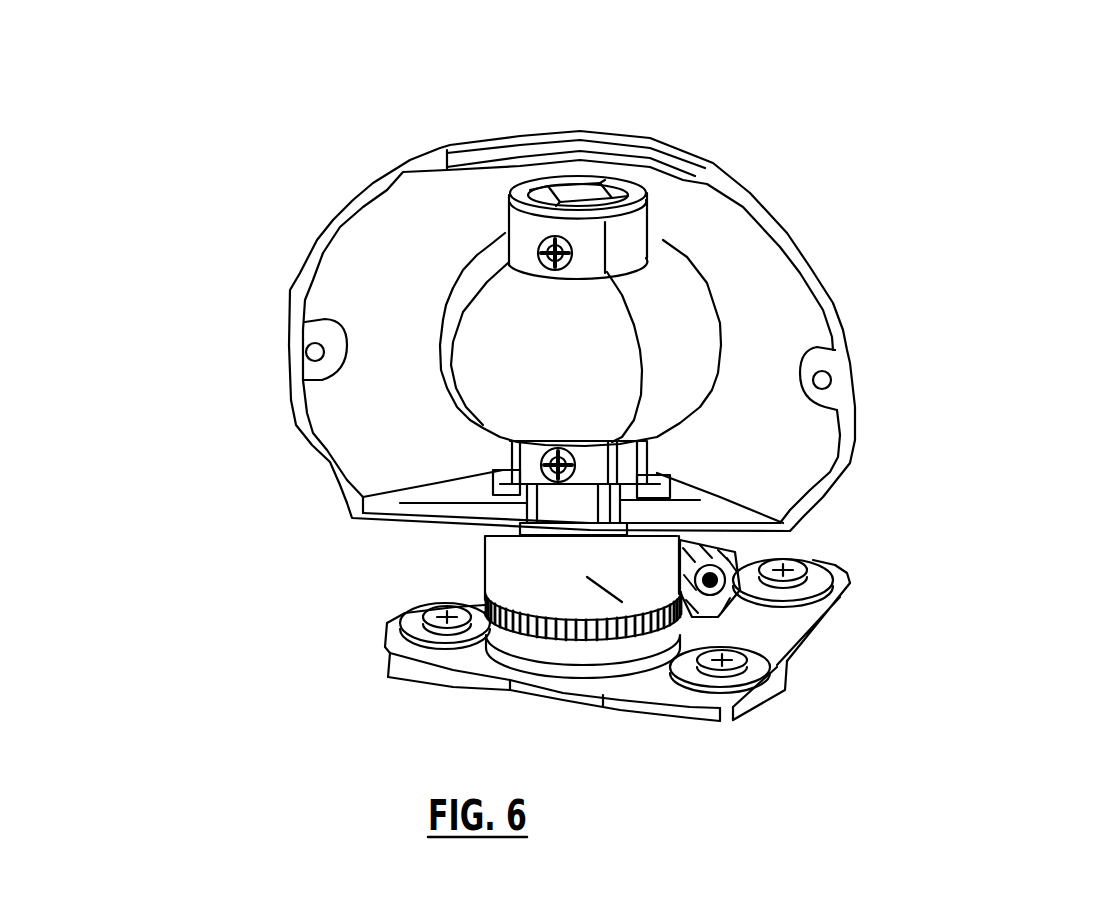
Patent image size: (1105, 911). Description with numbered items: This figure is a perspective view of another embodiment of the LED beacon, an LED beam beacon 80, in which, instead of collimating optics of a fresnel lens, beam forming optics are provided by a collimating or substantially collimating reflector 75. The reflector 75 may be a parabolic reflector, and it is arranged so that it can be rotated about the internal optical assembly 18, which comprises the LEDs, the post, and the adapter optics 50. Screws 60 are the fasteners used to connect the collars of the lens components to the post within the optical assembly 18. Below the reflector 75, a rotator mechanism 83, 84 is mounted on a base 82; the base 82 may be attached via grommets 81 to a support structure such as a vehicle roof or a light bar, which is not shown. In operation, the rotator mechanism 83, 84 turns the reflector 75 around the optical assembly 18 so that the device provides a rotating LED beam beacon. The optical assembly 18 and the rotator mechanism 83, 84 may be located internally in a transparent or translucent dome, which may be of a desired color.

The camera mount assembly 80 is at (574, 67).
The reflector 75 is at (383, 237).
The internal optical assembly 18 is at (495, 332).
The adapter optics 50 is at (687, 327).
The screws 60 is at (647, 195).
The grommets 81 is at (430, 612).
The base 82 is at (385, 643).
The rotator mechanism 83 is at (737, 570).
The rotator mechanism 84 is at (777, 692).